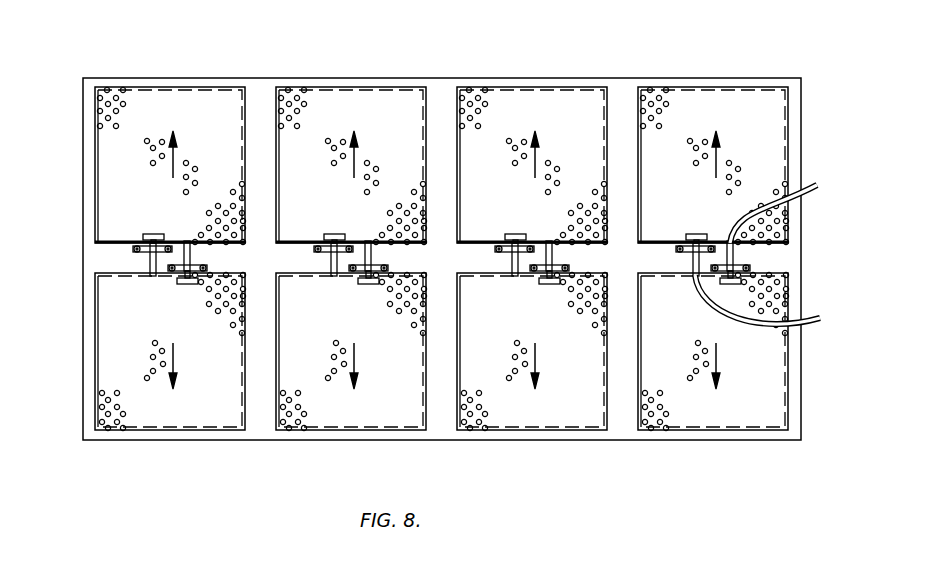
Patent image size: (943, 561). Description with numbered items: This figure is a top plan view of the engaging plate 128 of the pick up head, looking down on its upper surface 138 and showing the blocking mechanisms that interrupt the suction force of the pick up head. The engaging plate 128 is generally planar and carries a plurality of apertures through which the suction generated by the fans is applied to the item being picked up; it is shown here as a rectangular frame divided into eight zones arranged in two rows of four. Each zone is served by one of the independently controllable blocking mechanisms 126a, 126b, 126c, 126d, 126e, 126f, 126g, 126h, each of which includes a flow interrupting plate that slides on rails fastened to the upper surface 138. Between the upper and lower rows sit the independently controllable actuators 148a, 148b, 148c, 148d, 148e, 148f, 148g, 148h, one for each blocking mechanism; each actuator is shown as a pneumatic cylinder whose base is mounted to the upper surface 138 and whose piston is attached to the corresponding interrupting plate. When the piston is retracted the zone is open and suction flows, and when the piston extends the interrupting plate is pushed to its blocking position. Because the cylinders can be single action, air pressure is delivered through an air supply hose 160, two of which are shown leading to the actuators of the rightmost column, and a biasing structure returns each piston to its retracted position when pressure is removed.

The blocking mechanism 126a is at (163, 95).
The blocking mechanism 126b is at (362, 95).
The blocking mechanism 126c is at (542, 95).
The blocking mechanism 126d is at (722, 95).
The blocking mechanism 126e is at (162, 432).
The blocking mechanism 126f is at (342, 432).
The blocking mechanism 126g is at (534, 432).
The blocking mechanism 126h is at (704, 432).
The engaging plate 128 is at (80, 244).
The upper surface 138 is at (95, 265).
The actuator 148a is at (150, 262).
The actuator 148b is at (331, 260).
The actuator 148c is at (512, 260).
The actuator 148d is at (693, 260).
The actuator 148e is at (192, 262).
The actuator 148f is at (371, 258).
The actuator 148g is at (552, 256).
The actuator 148h is at (734, 256).
The air supply hose 160 is at (817, 186).